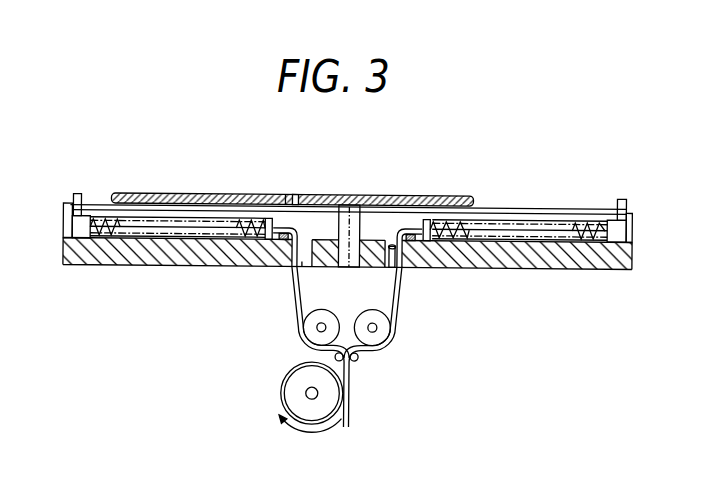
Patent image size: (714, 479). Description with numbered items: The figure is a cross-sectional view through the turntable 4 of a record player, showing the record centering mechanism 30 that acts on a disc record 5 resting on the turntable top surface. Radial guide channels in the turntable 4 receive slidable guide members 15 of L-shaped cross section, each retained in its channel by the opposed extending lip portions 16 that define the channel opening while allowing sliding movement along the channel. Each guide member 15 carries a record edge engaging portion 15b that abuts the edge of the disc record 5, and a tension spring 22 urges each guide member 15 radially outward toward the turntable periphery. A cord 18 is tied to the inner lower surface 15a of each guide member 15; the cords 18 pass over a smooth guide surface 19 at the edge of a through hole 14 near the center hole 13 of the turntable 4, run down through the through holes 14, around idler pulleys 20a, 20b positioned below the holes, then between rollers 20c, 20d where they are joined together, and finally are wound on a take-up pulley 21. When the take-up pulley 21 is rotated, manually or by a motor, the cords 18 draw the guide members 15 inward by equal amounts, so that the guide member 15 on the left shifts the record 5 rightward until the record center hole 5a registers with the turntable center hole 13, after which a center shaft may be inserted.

The turntable 4 is at (510, 267).
The disc record 5 is at (257, 195).
The center hole in disc record 5a is at (293, 195).
The center hole of turntable 13 is at (352, 233).
The through holes 14 is at (303, 265).
The guide member 15 is at (72, 232).
The inner lower surface 15a is at (102, 240).
The record edge engaging portion 15b is at (74, 196).
The lip portions 16 is at (88, 207).
The cord 18 is at (173, 222).
The guide surface 19 is at (297, 228).
The idler pulley 20a is at (303, 328).
The idler pulley 20b is at (392, 328).
The roller 20c is at (336, 356).
The roller 20d is at (359, 358).
The take-up pulley 21 is at (290, 397).
The tension spring 22 is at (103, 220).
The centering mechanism 30 is at (353, 372).